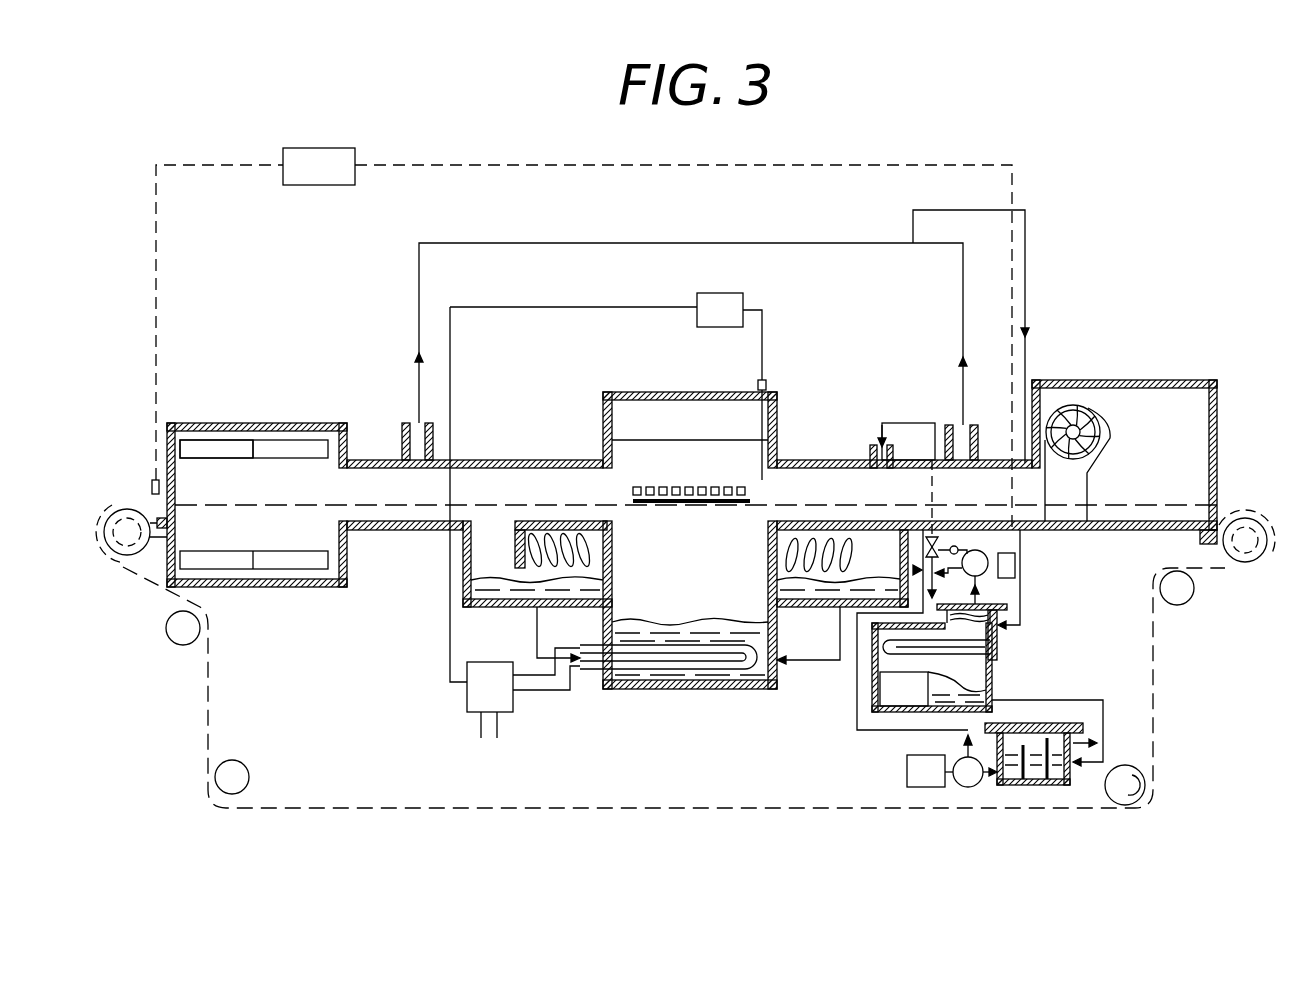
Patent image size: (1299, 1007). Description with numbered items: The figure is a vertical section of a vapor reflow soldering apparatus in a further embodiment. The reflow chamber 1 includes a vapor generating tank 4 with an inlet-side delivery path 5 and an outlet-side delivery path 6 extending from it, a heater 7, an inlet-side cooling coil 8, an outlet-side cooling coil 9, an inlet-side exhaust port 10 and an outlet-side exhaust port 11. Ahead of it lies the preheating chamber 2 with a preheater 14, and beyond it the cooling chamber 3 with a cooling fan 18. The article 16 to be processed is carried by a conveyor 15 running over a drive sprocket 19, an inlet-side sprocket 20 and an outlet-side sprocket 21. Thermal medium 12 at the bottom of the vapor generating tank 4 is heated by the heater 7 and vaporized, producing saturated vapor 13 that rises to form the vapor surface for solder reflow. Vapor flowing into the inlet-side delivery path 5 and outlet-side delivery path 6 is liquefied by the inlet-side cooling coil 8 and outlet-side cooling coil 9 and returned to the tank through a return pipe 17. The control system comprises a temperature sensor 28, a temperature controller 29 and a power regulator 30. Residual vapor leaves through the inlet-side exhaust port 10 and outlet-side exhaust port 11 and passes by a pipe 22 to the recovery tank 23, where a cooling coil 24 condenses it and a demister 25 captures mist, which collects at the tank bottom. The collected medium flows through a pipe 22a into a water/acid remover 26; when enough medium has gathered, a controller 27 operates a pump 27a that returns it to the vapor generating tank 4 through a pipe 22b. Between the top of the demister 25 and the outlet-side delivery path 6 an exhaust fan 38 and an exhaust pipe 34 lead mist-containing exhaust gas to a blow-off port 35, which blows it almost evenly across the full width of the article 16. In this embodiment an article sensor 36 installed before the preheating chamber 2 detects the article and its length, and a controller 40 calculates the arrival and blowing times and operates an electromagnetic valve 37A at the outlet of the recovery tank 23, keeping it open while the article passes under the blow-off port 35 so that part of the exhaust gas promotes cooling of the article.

The reflow chamber 1 is at (630, 392).
The preheating chamber 2 is at (262, 423).
The cooling chamber 3 is at (1200, 380).
The vapor generating tank 4 is at (603, 410).
The inlet-side delivery path 5 is at (517, 460).
The outlet-side delivery path 6 is at (800, 460).
The heater 7 is at (582, 669).
The inlet-side cooling coil 8 is at (533, 560).
The outlet-side cooling coil 9 is at (853, 556).
The inlet-side exhaust port 10 is at (402, 432).
The outlet-side exhaust port 11 is at (978, 430).
The thermal medium 12 is at (645, 689).
The saturated vapor 13 is at (675, 440).
The preheater 14 is at (285, 552).
The conveyor 15 is at (202, 500).
The article to be processed 16 is at (625, 494).
The return pipe 17 is at (798, 662).
The cooling fan 18 is at (1090, 407).
The drive sprocket 19 is at (1145, 778).
The inlet-side sprocket 20 is at (115, 556).
The outlet-side sprocket 21 is at (1256, 561).
The pipe 22 is at (704, 243).
The pipe 22a is at (1105, 700).
The pipe 22b is at (856, 735).
The recovery tank 23 is at (995, 692).
The cooling coil 24 is at (1000, 651).
The demister 25 is at (1002, 616).
The water/acid remover 26 is at (1058, 787).
The controller 27 is at (912, 787).
The pump 27a is at (968, 787).
The temperature sensor 28 is at (770, 400).
The temperature controller 29 is at (745, 300).
The power regulator 30 is at (467, 700).
The exhaust pipe 34 is at (922, 423).
The blow-off port 35 is at (878, 430).
The article sensor 36 is at (150, 484).
The electromagnetic valve 37A is at (935, 535).
The exhaust fan 38 is at (990, 558).
The controller 40 is at (355, 152).